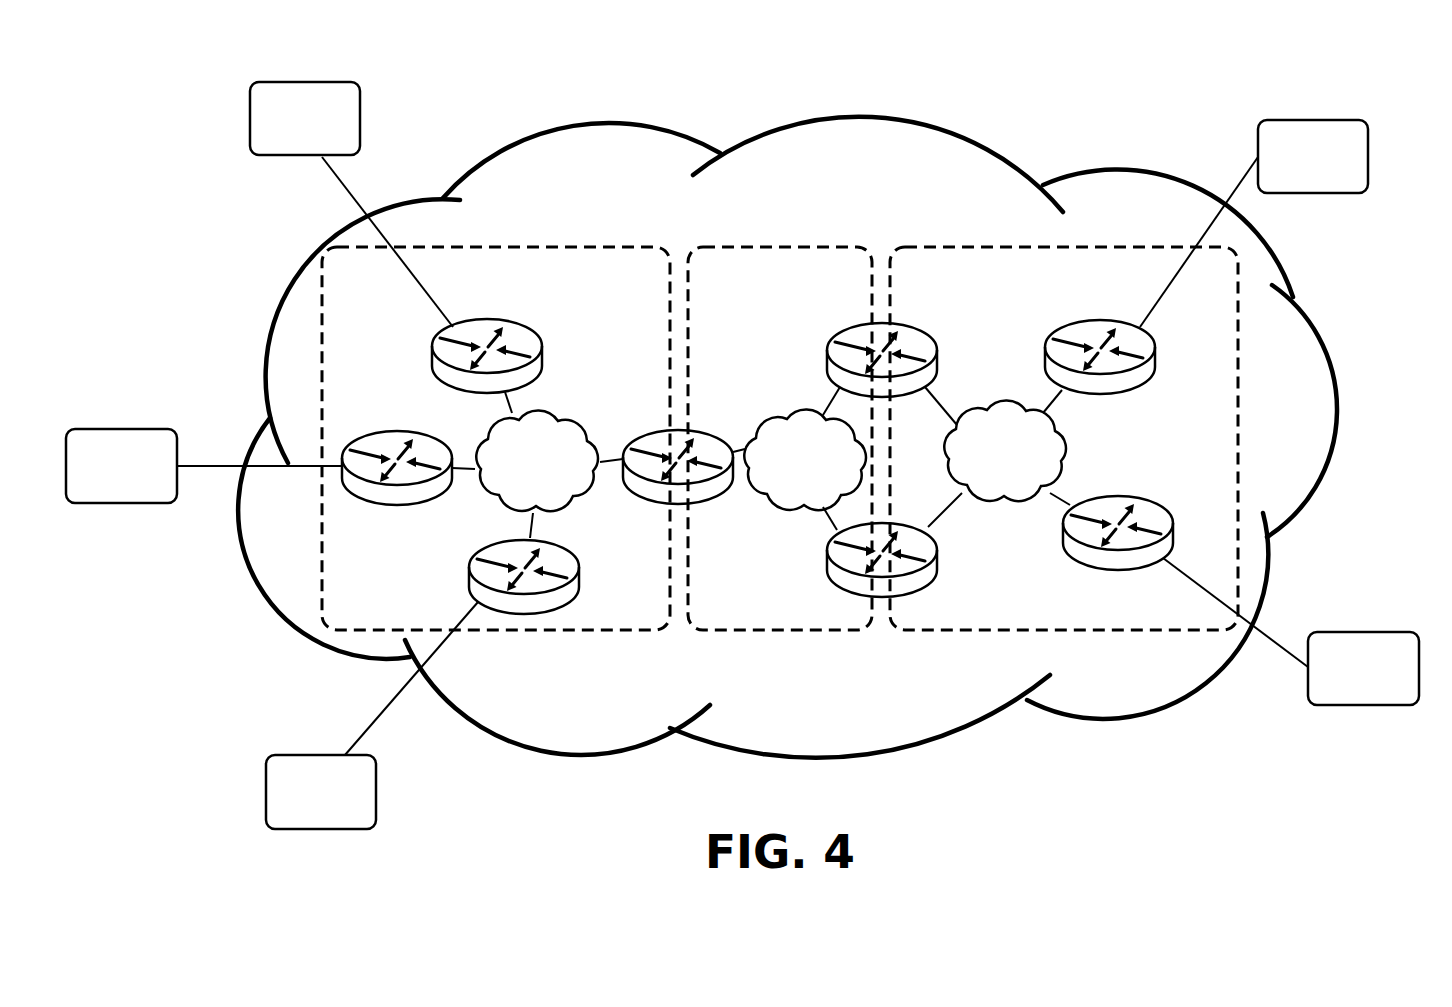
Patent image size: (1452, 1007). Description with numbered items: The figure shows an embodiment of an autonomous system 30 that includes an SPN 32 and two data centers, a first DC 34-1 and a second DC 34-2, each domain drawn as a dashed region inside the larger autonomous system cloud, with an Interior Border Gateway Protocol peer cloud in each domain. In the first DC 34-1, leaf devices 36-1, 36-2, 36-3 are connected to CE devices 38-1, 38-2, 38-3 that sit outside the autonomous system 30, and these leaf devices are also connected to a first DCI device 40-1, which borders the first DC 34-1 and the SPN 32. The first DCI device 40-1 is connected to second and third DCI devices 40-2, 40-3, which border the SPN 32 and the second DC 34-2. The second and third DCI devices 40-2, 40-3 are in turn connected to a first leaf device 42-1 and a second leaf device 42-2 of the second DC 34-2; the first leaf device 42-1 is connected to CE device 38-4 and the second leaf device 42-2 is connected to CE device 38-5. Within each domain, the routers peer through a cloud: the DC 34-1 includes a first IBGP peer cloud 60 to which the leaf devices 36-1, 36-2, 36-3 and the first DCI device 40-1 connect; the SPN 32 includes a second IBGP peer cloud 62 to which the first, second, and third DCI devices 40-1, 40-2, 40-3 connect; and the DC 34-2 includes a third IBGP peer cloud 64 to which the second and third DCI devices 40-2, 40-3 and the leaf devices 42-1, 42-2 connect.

The autonomous system 30 is at (820, 107).
The SPN 32 is at (780, 438).
The first DC 34-1 is at (496, 438).
The second DC 34-2 is at (1064, 438).
The leaf device 36-1 is at (371, 507).
The leaf device 36-2 is at (433, 340).
The leaf device 36-3 is at (577, 607).
The CE device 38-1 is at (149, 429).
The CE device 38-2 is at (322, 82).
The CE device 38-3 is at (308, 755).
The CE device 38-4 is at (1283, 118).
The CE device 38-5 is at (1355, 632).
The first DCI device 40-1 is at (650, 428).
The second DCI device 40-2 is at (833, 340).
The third DCI device 40-3 is at (833, 580).
The first leaf device 42-1 is at (1130, 393).
The second leaf device 42-2 is at (1140, 495).
The first IBGP peer cloud 60 is at (537, 460).
The second IBGP peer cloud 62 is at (805, 459).
The third IBGP peer cloud 64 is at (1005, 450).